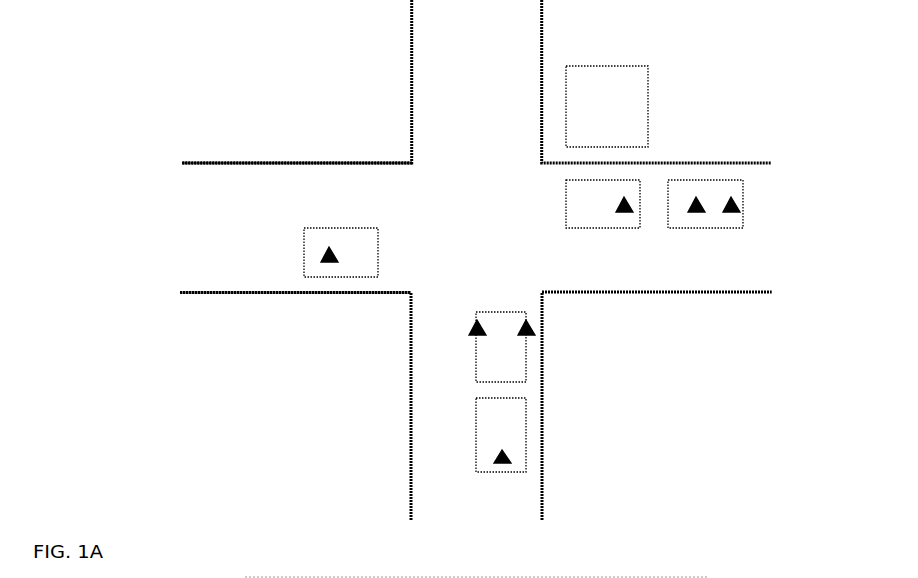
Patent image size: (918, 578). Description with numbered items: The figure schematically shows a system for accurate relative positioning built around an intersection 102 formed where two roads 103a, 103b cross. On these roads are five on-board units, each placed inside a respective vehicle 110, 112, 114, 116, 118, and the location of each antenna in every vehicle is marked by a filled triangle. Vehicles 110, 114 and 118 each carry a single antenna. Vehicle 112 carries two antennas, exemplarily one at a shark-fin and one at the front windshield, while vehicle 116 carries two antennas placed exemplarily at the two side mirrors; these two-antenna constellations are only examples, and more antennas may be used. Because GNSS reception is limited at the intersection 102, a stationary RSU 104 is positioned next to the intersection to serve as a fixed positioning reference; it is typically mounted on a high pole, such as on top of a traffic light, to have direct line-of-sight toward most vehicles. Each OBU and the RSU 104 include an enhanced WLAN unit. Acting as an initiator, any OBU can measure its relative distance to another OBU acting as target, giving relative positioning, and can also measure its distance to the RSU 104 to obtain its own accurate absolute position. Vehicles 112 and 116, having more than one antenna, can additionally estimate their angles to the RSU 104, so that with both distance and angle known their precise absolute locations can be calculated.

The intersection 102 is at (470, 228).
The road 103a is at (476, 260).
The road 103b is at (296, 228).
The RSU 104 is at (607, 106).
The vehicle 110 is at (603, 204).
The vehicle 112 is at (705, 204).
The vehicle 114 is at (341, 252).
The vehicle 116 is at (502, 347).
The vehicle 118 is at (501, 435).